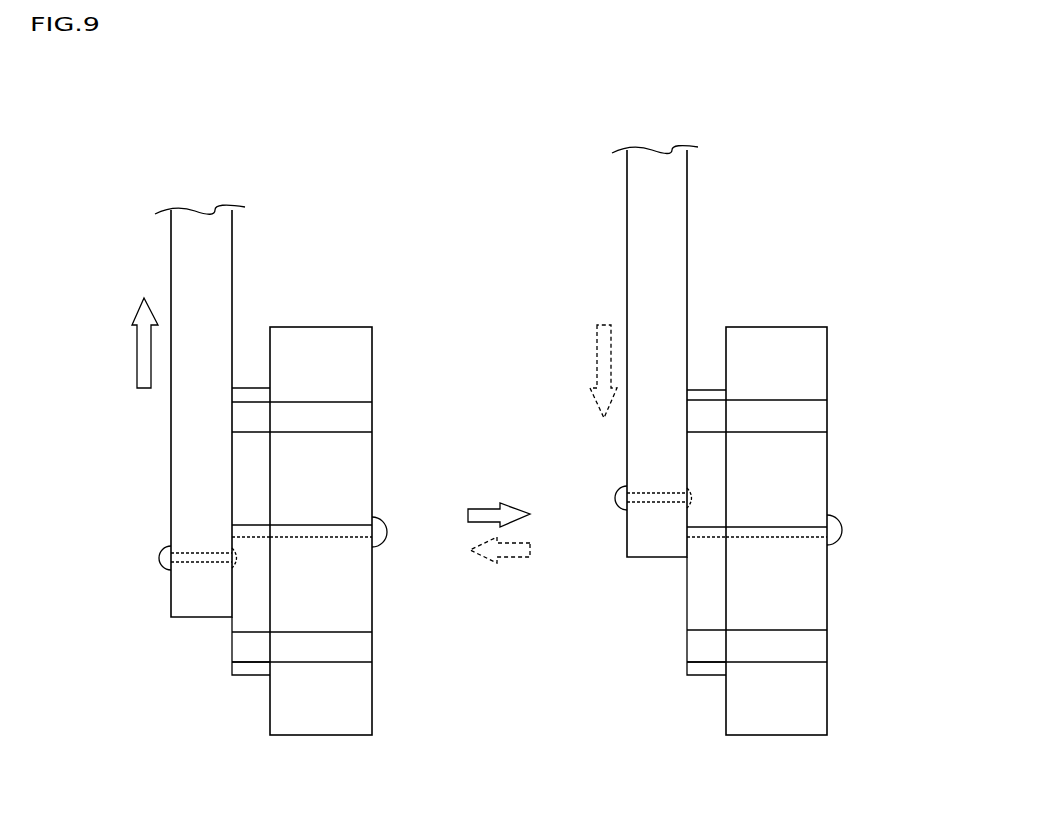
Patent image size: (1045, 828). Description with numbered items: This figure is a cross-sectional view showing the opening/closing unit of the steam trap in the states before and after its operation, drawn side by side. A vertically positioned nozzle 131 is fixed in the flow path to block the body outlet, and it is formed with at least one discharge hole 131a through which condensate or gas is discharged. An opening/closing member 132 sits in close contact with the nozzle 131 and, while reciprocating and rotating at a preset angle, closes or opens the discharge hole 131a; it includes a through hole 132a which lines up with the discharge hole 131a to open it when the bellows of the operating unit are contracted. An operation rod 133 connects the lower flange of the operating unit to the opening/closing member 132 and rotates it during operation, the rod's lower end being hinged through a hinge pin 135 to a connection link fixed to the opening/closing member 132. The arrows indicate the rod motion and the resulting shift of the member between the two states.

The guide member 131 is at (320, 327).
The guide groove 131a is at (343, 402).
The locking protrusion 132 is at (250, 677).
The inclined surface 132a is at (250, 663).
The lever 133 is at (232, 248).
The elastic pin 135 is at (160, 556).